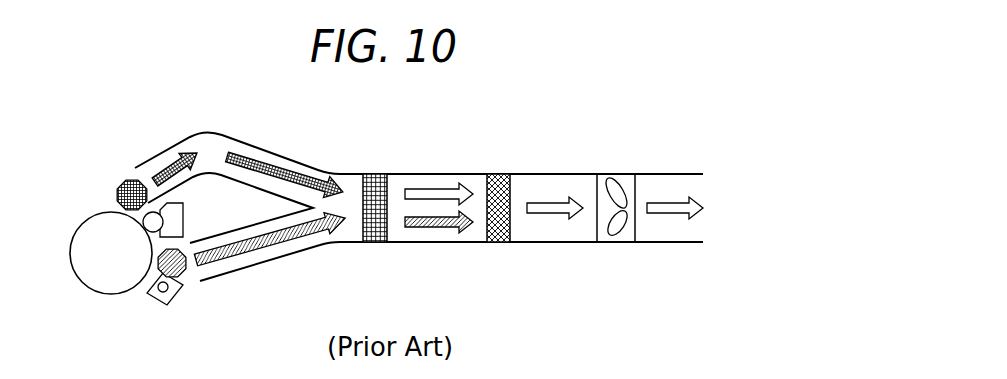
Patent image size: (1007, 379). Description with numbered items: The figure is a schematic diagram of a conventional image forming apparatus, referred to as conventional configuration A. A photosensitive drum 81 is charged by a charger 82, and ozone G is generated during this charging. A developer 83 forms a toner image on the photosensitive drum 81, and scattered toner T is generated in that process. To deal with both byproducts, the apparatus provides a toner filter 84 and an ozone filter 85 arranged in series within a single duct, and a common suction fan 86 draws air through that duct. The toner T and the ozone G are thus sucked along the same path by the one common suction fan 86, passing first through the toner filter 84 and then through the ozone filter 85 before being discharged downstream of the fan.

The photosensitive drum 81 is at (81, 281).
The charger 82 is at (148, 294).
The developer 83 is at (184, 217).
The toner filter 84 is at (382, 172).
The ozone filter 85 is at (497, 173).
The common suction fan 86 is at (617, 173).
The toner T is at (128, 180).
The ozone G is at (184, 276).